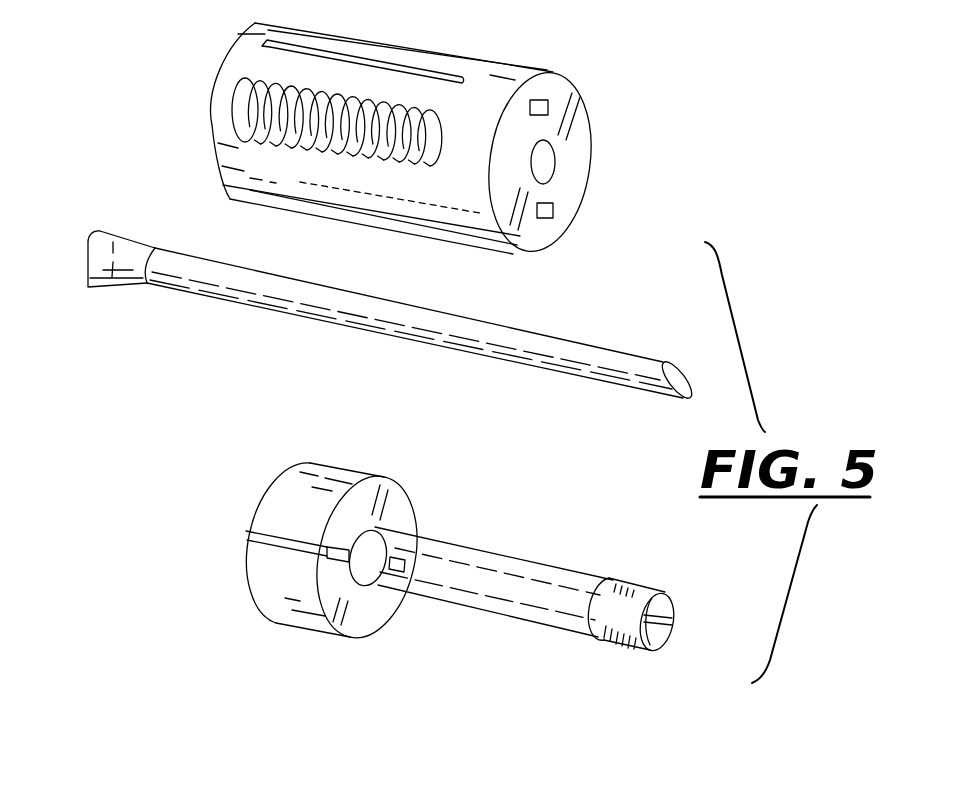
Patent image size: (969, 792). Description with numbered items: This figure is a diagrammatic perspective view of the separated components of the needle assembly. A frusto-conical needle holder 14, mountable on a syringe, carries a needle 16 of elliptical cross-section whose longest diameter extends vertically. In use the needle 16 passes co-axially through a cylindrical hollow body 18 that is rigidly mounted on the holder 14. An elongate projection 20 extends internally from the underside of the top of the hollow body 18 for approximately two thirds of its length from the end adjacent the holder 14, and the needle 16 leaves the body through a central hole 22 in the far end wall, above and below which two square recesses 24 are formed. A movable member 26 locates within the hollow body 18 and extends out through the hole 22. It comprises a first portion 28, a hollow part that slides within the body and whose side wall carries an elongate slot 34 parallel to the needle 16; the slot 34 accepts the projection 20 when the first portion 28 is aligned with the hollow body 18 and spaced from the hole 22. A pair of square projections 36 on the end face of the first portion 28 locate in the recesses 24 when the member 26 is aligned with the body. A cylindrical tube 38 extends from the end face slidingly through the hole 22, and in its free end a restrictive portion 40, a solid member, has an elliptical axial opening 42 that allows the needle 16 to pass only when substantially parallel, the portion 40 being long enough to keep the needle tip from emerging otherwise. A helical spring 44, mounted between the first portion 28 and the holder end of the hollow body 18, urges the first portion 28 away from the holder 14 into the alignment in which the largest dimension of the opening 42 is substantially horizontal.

The needle holder 14 is at (133, 264).
The needle 16 is at (610, 368).
The hollow body 18 is at (480, 238).
The elongate projection 20 is at (262, 46).
The central hole 22 is at (546, 162).
The square recesses 24 is at (550, 107).
The movable member 26 is at (368, 458).
The first portion 28 is at (407, 488).
The elongate slot 34 is at (290, 545).
The square projections 36 is at (396, 572).
The cylindrical tube 38 is at (520, 578).
The restrictive portion 40 is at (634, 596).
The elliptical axial opening 42 is at (673, 619).
The helical spring 44 is at (230, 109).